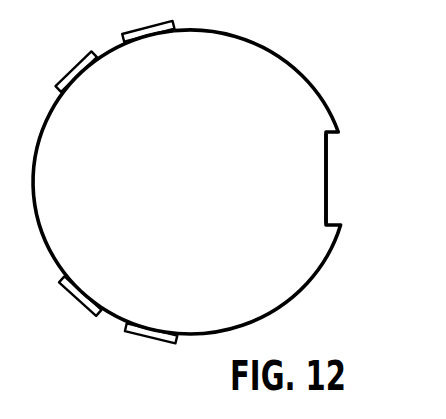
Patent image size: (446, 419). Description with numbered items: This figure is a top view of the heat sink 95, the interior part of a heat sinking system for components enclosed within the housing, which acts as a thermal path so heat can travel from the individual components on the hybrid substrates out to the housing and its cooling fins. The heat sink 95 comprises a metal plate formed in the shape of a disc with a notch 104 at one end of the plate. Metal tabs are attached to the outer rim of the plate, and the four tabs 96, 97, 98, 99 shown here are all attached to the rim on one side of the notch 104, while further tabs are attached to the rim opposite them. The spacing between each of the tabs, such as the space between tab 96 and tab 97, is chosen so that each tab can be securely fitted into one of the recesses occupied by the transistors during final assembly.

The heat sink 95 is at (198, 167).
The tab 96 is at (152, 343).
The tab 97 is at (84, 309).
The tab 98 is at (68, 64).
The tab 99 is at (171, 24).
The notch 104 is at (329, 173).